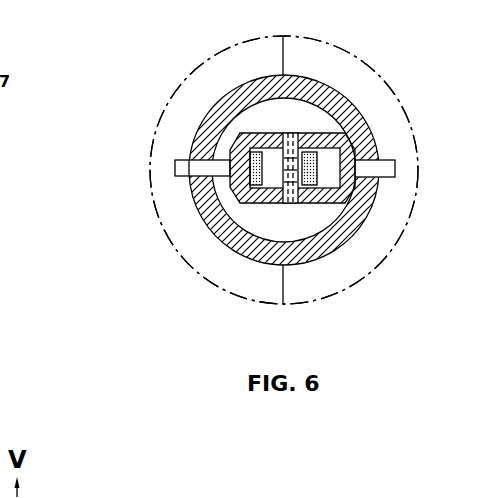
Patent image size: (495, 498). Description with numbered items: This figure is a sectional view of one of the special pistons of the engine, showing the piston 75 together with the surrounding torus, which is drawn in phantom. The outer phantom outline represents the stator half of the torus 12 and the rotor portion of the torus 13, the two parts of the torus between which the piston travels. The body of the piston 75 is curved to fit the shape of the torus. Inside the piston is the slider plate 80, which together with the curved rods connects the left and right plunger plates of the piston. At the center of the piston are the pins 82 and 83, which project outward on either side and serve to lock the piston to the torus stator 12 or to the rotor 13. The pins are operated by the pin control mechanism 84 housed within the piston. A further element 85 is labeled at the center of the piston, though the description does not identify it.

The housing 12 is at (404, 94).
The casing 13 is at (186, 72).
The shield ring 75 is at (207, 109).
The coil assembly 80 is at (235, 148).
The terminal 82 is at (395, 169).
The terminal 83 is at (175, 168).
The lower shell 84 is at (235, 205).
The gap 85 is at (290, 208).